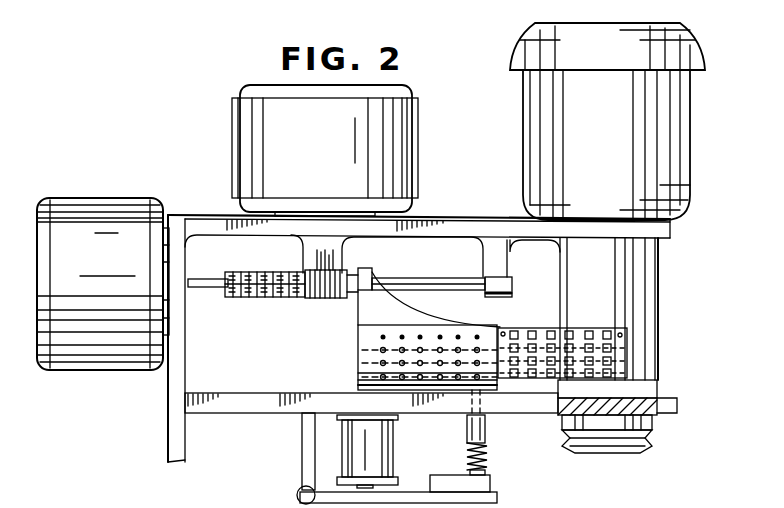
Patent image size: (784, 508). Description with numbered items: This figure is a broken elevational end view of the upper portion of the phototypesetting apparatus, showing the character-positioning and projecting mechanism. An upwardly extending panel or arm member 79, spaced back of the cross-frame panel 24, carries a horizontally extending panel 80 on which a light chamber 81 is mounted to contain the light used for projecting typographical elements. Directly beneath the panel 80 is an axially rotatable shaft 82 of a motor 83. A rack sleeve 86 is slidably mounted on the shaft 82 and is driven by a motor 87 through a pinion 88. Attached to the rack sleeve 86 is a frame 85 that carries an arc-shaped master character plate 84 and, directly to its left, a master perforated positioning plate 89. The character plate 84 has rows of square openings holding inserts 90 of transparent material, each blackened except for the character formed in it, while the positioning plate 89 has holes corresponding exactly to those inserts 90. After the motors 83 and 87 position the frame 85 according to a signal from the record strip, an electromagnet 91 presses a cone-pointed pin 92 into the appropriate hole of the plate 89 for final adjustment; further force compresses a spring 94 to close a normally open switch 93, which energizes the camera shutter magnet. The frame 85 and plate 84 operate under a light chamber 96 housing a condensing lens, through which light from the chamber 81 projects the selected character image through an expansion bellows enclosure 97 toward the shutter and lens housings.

The cross-frame panel 24 is at (258, 411).
The upwardly extending panel or arm member 79 is at (170, 445).
The horizontally extending panel 80 is at (452, 217).
The light chamber 81 is at (524, 121).
The shaft 82 is at (431, 283).
The motor 83 is at (113, 198).
The arc-shaped master character plate 84 is at (525, 329).
The frame 85 is at (425, 320).
The rack sleeve 86 is at (246, 297).
The motor 87 is at (405, 117).
The pinion 88 is at (320, 298).
The master perforated positioning plate 89 is at (358, 356).
The inserts 90 is at (608, 332).
The electromagnet 91 is at (398, 442).
The cone-pointed pin 92 is at (478, 395).
The switch 93 is at (490, 483).
The spring 94 is at (487, 458).
The light chamber 96 is at (656, 296).
The expansion bellows enclosure 97 is at (655, 438).